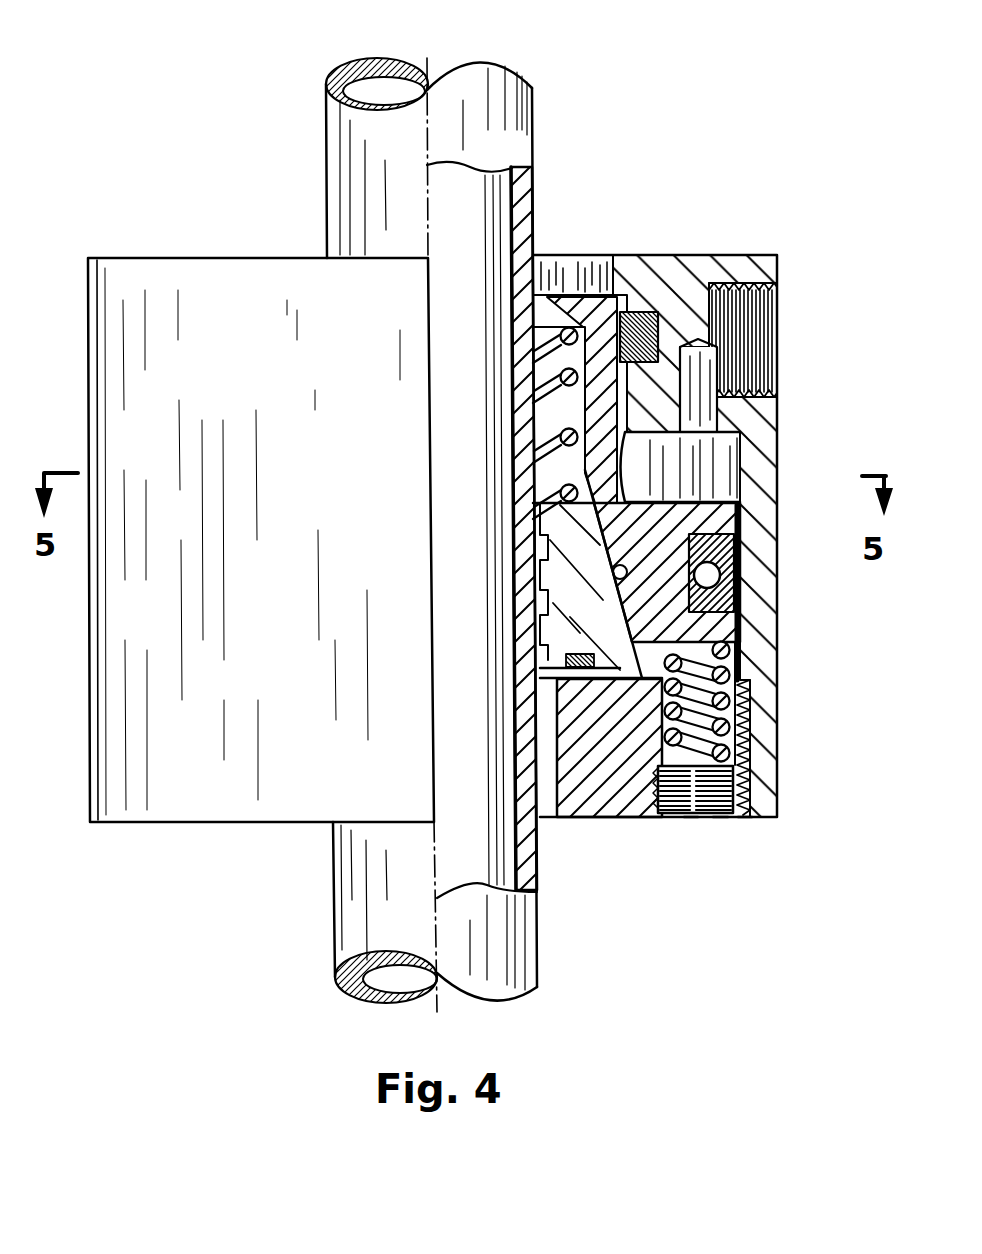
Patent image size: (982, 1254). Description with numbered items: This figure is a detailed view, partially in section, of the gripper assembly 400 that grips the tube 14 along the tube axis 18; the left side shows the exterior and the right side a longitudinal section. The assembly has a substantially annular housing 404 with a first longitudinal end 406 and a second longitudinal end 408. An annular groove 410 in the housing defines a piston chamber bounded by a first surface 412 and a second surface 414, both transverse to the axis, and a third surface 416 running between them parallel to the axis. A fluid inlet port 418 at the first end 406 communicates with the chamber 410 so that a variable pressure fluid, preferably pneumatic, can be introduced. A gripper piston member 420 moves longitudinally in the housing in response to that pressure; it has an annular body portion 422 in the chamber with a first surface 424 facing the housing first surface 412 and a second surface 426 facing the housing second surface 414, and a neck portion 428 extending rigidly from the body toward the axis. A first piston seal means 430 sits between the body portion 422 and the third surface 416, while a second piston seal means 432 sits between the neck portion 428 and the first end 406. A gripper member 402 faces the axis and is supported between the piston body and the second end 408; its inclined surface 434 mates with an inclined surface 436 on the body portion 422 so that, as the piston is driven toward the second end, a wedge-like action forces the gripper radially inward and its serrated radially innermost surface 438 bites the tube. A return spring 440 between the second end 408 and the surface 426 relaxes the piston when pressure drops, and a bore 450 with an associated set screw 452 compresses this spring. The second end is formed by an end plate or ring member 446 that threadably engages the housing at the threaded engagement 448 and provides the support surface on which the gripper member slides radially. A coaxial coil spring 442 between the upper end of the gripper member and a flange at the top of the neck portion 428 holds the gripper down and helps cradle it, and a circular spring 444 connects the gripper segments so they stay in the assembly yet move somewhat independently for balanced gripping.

The tube 14 is at (538, 100).
The tube axis 18 is at (430, 72).
The gripper assembly 400 is at (195, 238).
The gripper member 402 is at (585, 685).
The housing 404 is at (775, 495).
The first longitudinal end 406 is at (735, 265).
The second longitudinal end 408 is at (742, 818).
The annular groove 410 is at (760, 525).
The first surface 412 is at (745, 450).
The second surface 414 is at (745, 686).
The third surface 416 is at (740, 532).
The fluid inlet port 418 is at (765, 310).
The gripper piston member 420 is at (548, 292).
The annular body portion 422 is at (740, 542).
The first surface of piston body 424 is at (720, 412).
The second surface of piston body 426 is at (705, 675).
The neck portion 428 is at (545, 335).
The first piston seal means 430 is at (720, 580).
The second piston seal means 432 is at (640, 305).
The inclined surface of gripper member 434 is at (590, 565).
The inclined surface of piston body 436 is at (630, 563).
The radially innermost surface 438 is at (560, 563).
The return spring 440 is at (722, 720).
The coaxial coil spring 442 is at (548, 385).
The circular spring 444 is at (566, 661).
The end plate or ring member 446 is at (578, 818).
The threaded engagement 448 is at (735, 775).
The bore 450 is at (690, 818).
The set screw 452 is at (720, 818).